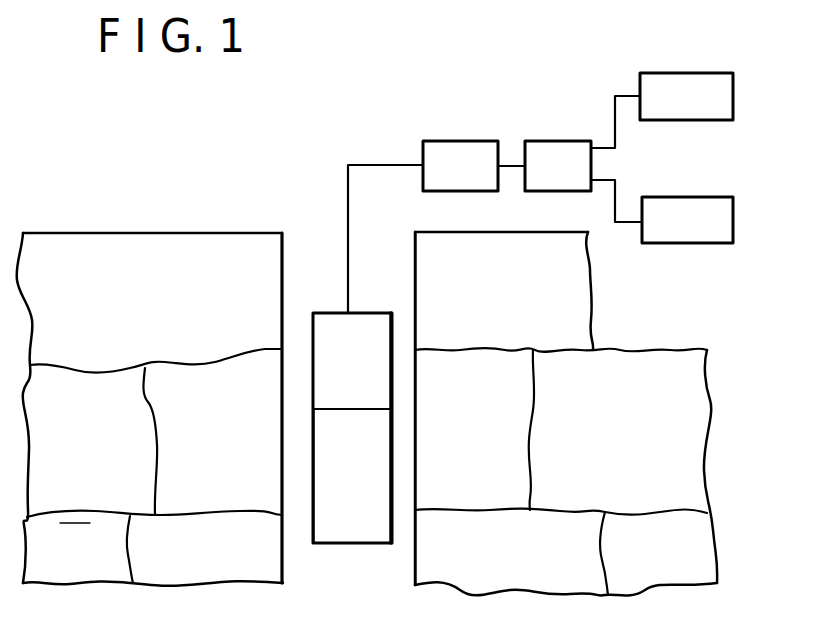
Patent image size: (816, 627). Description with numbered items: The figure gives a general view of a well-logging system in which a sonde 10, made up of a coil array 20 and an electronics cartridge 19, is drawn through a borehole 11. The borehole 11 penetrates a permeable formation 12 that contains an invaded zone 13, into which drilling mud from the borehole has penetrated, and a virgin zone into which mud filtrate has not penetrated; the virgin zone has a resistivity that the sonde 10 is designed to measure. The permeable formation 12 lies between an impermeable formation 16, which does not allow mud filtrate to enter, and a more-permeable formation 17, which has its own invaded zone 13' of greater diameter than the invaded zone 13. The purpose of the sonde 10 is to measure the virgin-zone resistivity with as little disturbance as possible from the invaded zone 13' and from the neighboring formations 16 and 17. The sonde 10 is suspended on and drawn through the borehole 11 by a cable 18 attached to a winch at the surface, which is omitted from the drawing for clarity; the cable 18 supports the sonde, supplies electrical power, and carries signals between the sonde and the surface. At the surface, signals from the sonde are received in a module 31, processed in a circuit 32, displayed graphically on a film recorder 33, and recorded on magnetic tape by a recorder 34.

The sonde 10 is at (352, 418).
The borehole 11 is at (417, 258).
The permeable formation 12 is at (110, 453).
The invaded zone 13 is at (367, 472).
The invaded zone 13' is at (367, 553).
The impermeable formation 16 is at (183, 296).
The more-permeable formation 17 is at (92, 554).
The cable 18 is at (348, 193).
The electronics cartridge 19 is at (370, 313).
The coil array 20 is at (357, 543).
The module 31 is at (455, 141).
The circuit 32 is at (553, 141).
The film recorder 33 is at (688, 73).
The recorder 34 is at (670, 243).